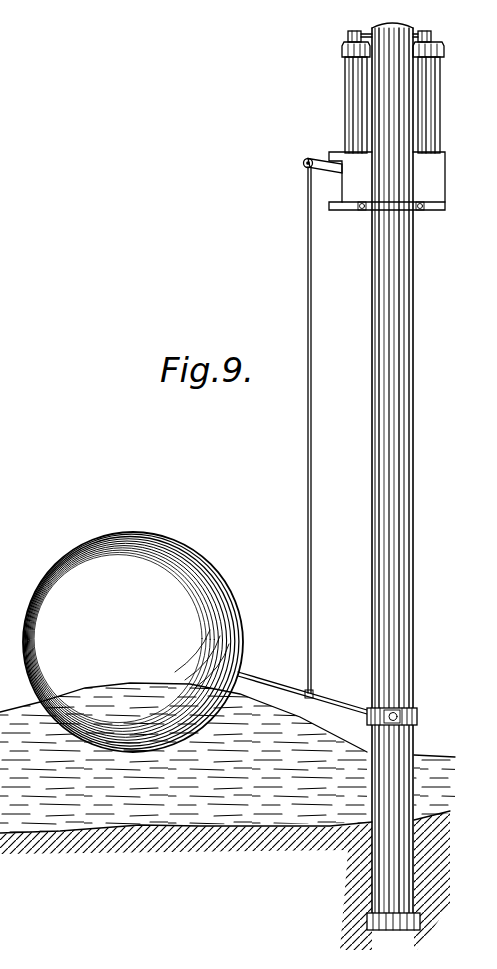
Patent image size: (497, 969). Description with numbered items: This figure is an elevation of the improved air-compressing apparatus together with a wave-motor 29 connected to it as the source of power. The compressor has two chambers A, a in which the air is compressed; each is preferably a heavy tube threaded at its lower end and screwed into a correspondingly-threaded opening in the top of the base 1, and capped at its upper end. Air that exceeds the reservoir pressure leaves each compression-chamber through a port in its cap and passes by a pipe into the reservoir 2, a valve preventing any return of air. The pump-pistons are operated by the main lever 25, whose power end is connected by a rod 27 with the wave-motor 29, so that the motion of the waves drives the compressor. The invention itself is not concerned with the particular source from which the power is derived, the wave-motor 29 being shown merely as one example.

The reservoir 2 is at (380, 558).
The air-compression chamber a is at (350, 95).
The air-compression chamber A is at (432, 108).
The base 1 is at (387, 181).
The main lever 25 is at (329, 163).
The rod 27 is at (307, 502).
The wave-motor 29 is at (270, 681).